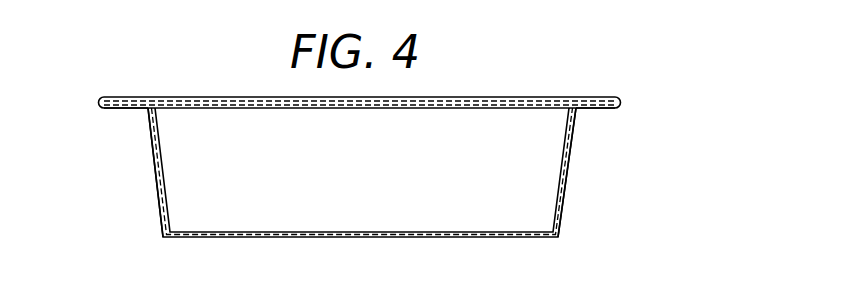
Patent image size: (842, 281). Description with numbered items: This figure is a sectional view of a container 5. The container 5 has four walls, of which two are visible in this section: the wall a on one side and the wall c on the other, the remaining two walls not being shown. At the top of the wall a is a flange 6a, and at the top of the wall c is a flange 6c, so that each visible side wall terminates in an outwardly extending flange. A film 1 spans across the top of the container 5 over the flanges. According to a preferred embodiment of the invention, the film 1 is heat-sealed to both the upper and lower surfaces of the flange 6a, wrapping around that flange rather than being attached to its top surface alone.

The film 1 is at (523, 97).
The container 5 is at (563, 183).
The flange 6a is at (128, 108).
The flange 6c is at (597, 110).
The wall a is at (163, 166).
The wall c is at (552, 171).